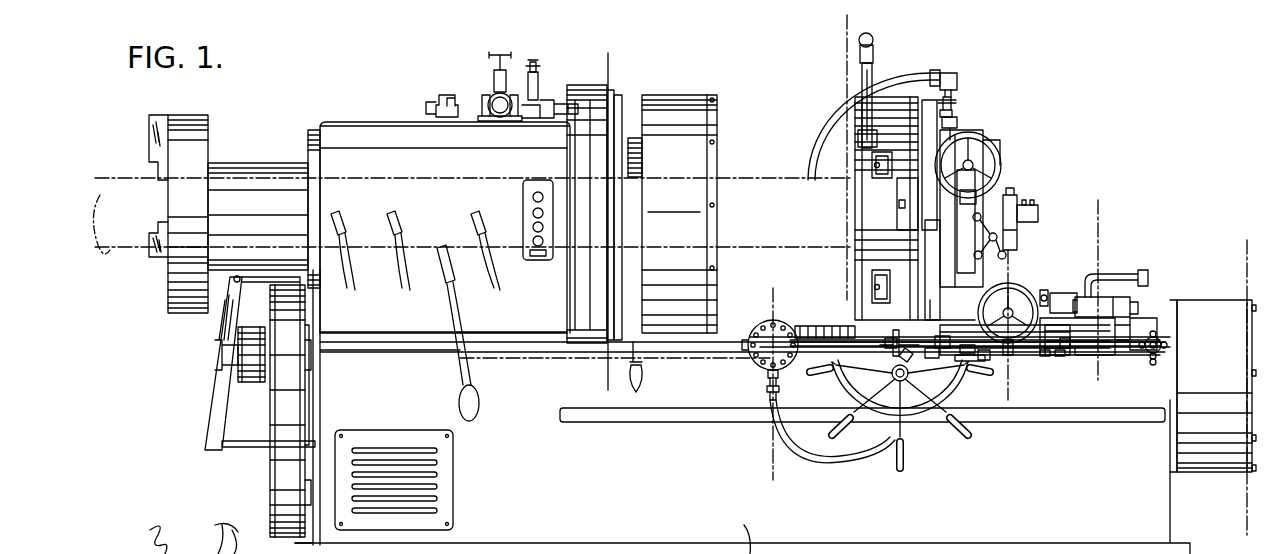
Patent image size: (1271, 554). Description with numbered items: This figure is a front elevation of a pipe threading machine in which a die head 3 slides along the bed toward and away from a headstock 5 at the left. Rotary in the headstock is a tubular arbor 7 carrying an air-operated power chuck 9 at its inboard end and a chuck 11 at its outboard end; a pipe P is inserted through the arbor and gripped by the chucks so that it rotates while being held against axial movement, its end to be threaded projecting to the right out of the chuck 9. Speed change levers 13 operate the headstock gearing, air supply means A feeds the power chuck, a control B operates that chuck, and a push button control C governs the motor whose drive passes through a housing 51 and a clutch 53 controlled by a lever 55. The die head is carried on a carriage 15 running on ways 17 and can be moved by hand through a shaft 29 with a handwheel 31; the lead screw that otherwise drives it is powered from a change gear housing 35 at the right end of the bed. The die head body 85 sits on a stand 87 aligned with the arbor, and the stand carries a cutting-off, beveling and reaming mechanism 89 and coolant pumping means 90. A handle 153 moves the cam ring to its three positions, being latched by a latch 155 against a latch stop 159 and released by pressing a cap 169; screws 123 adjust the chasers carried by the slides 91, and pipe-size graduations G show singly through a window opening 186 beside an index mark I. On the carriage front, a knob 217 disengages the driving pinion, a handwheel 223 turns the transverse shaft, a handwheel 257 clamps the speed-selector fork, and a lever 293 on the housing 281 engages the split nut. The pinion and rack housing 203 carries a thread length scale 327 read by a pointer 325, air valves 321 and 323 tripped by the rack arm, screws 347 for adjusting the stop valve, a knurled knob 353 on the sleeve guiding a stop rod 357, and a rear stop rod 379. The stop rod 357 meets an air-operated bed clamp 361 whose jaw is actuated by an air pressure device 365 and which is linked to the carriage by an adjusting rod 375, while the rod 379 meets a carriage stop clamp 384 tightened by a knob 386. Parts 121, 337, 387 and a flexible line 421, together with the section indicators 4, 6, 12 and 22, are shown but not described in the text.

The chuck 11 is at (200, 122).
The tubular arbor 7 is at (262, 162).
The headstock 5 is at (388, 120).
The air supply means A is at (510, 64).
The push button control C is at (538, 188).
The speed change levers 13 is at (386, 216).
The lever 55 is at (458, 388).
The air-operated power chuck 9 is at (680, 96).
The ways 17 is at (700, 348).
The control B is at (641, 385).
The housing 51 is at (272, 478).
The clutch 53 is at (248, 385).
The air-operated bed clamp 361 is at (756, 332).
The air pressure device 365 is at (768, 383).
The hose 421 is at (836, 458).
The stand 87 is at (932, 242).
The handle 153 is at (872, 70).
The cap 169 is at (871, 36).
The latch 155 is at (865, 130).
The means for pumping coolant 90 is at (958, 80).
The die head body 85 is at (950, 110).
The three-position latch stop 159 is at (860, 141).
The screws 123 is at (874, 165).
The plate 121 is at (874, 170).
The slides 91 is at (874, 182).
The window opening 186 is at (911, 204).
The graduations G is at (899, 205).
The index mark I is at (906, 205).
The mechanism 89 is at (1028, 196).
The knob 217 is at (985, 298).
The thread length scale 327 is at (950, 333).
The block 387 is at (1062, 293).
The handwheel 257 is at (1045, 290).
The lever 293 is at (1130, 276).
The housing 281 is at (1128, 302).
The carriage 15 is at (1140, 318).
The carriage stop clamp 384 is at (1165, 333).
The knob 386 is at (1153, 365).
The stop rod 379 is at (1120, 352).
The air valve 323 is at (1046, 356).
The screws 347 is at (1060, 356).
The pinion and rack housing 203 is at (1024, 352).
The stop rod 357 is at (825, 347).
The knurled knob 353 is at (890, 345).
The carriage stop adjusting rod 375 is at (816, 328).
The air valve 321 is at (915, 358).
The block 337 is at (935, 360).
The handwheel 223 is at (984, 355).
The pointer 325 is at (972, 362).
The shaft 29 is at (905, 382).
The handwheel 31 is at (912, 437).
The change gear housing 35 is at (1202, 460).
The pipe P is at (121, 178).
The die head 3 is at (857, 233).
The section line 4 is at (988, 265).
The section line 6 is at (537, 350).
The section line 12 is at (1120, 218).
The section line 22 is at (756, 297).